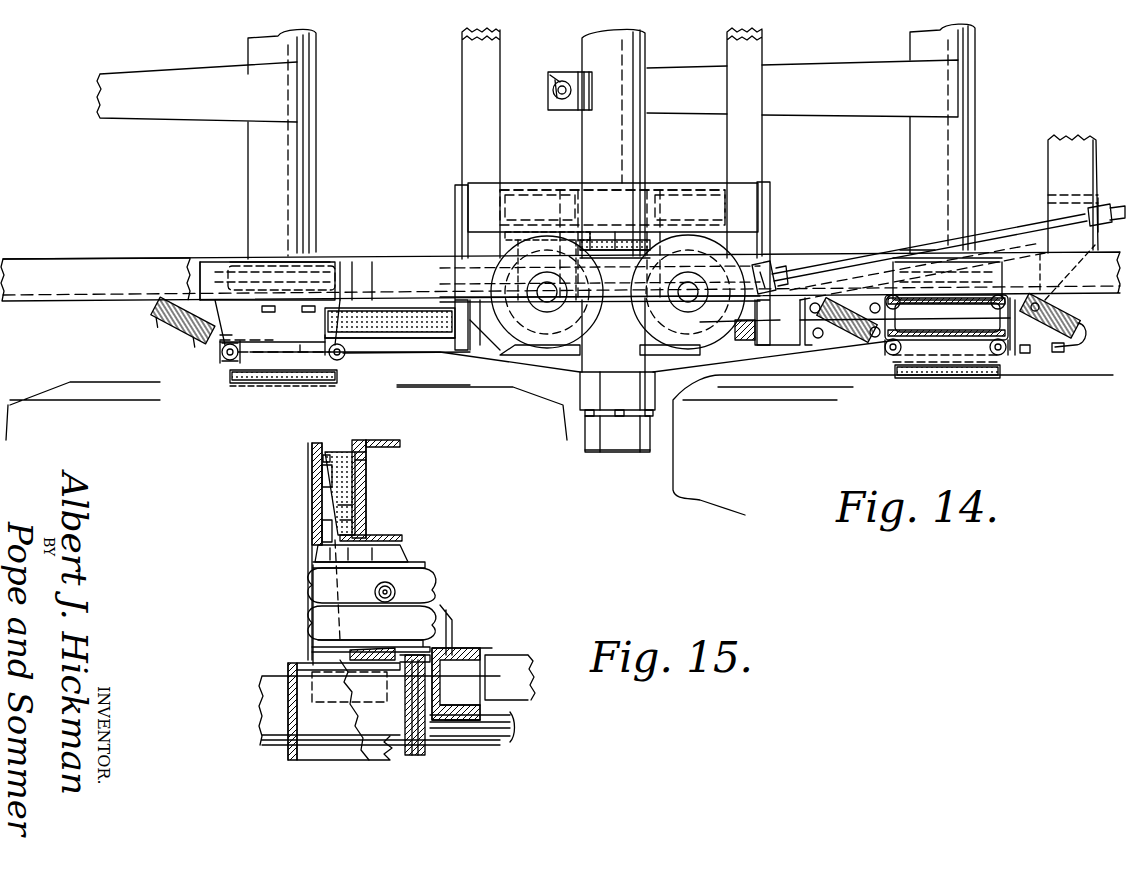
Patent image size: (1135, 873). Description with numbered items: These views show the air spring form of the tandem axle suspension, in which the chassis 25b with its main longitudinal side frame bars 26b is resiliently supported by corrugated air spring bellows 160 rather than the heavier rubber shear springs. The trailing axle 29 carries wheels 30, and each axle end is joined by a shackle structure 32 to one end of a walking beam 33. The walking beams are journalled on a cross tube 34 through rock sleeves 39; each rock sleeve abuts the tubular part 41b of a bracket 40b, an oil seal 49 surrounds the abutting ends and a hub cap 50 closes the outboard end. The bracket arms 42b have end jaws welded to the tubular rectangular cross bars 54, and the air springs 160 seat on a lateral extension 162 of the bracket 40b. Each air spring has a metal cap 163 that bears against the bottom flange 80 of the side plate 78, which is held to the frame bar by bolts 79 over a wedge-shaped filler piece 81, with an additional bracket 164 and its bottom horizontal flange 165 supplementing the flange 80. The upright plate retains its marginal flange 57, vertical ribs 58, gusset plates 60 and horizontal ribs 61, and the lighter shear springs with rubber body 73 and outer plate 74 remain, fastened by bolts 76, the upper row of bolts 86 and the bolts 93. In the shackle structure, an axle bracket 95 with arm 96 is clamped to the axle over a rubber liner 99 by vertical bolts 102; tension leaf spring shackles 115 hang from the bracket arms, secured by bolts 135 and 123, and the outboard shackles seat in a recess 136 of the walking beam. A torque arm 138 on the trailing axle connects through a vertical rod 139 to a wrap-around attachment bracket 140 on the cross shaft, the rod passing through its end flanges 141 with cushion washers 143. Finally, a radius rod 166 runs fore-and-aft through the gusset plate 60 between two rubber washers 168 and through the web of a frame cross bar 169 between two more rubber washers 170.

In FIG. 14, the chassis 25b is at (36, 262).
In FIG. 14, the main longitudinal side frame bar 26b is at (112, 240).
In FIG. 15, the main longitudinal side frame bar 26b is at (404, 442).
In FIG. 14, the trailing axle 29 is at (968, 40).
In FIG. 14, the wheels 30 is at (703, 506).
In FIG. 14, the shackle structure 32 is at (146, 315).
In FIG. 14, the walking beam 33 is at (534, 355).
In FIG. 15, the walking beam 33 is at (296, 662).
In FIG. 14, the cross tube 34 is at (645, 42).
In FIG. 15, the cross tube 34 is at (517, 718).
In FIG. 14, the rock sleeve 39 is at (632, 390).
In FIG. 15, the rock sleeve 39 is at (278, 748).
In FIG. 14, the bracket 40b is at (705, 183).
In FIG. 15, the bracket 40b is at (490, 654).
In FIG. 15, the tubular part 41b is at (470, 743).
In FIG. 14, the arms 42b is at (547, 192).
In FIG. 15, the arms 42b is at (486, 638).
In FIG. 14, the oil seal 49 is at (634, 230).
In FIG. 15, the oil seal 49 is at (424, 756).
In FIG. 14, the hub cap 50 is at (608, 450).
In FIG. 14, the cross bar 54 is at (763, 122).
In FIG. 15, the cross bar 54 is at (538, 678).
In FIG. 14, the marginal flange 57 is at (388, 336).
In FIG. 15, the marginal flange 57 is at (308, 442).
In FIG. 14, the vertical ribs 58 is at (780, 346).
In FIG. 14, the gusset plate 60 is at (771, 200).
In FIG. 15, the gusset plate 60 is at (440, 604).
In FIG. 15, the horizontal ribs 61 is at (312, 534).
In FIG. 14, the rubber body 73 is at (386, 316).
In FIG. 15, the rubber body 73 is at (368, 478).
In FIG. 14, the outer metal plate 74 is at (405, 377).
In FIG. 14, the bolts 76 is at (364, 336).
In FIG. 14, the side plate 78 is at (352, 260).
In FIG. 15, the side plate 78 is at (354, 442).
In FIG. 14, the bolts 79 is at (248, 304).
In FIG. 14, the flange 80 is at (210, 262).
In FIG. 15, the flange 80 is at (412, 542).
In FIG. 14, the wedge-shaped filler piece 81 is at (342, 262).
In FIG. 15, the wedge-shaped filler piece 81 is at (352, 442).
In FIG. 15, the upper row of bolts 86 is at (367, 462).
In FIG. 14, the upper row of bolts 93 is at (394, 260).
In FIG. 14, the axle bracket 95 is at (966, 335).
In FIG. 14, the arm 96 is at (200, 262).
In FIG. 14, the rubber liner 99 is at (944, 378).
In FIG. 14, the vertical bolts 102 is at (998, 358).
In FIG. 14, the leaf spring shackle 115 is at (176, 335).
In FIG. 14, the bolts 123 is at (818, 306).
In FIG. 14, the bolts 135 is at (1060, 350).
In FIG. 14, the recess 136 is at (1032, 350).
In FIG. 14, the axle torque arm 138 is at (854, 66).
In FIG. 14, the vertical rod 139 is at (556, 98).
In FIG. 14, the wrap-around attachment bracket 140 is at (592, 113).
In FIG. 14, the end flanges 141 is at (566, 74).
In FIG. 14, the cushion washers 143 is at (549, 74).
In FIG. 14, the air spring 160 is at (624, 328).
In FIG. 15, the air spring 160 is at (420, 588).
In FIG. 14, the lateral extension 162 is at (816, 338).
In FIG. 15, the lateral extension 162 is at (412, 750).
In FIG. 14, the metal cap 163 is at (720, 224).
In FIG. 15, the metal cap 163 is at (410, 552).
In FIG. 15, the additional bracket 164 is at (350, 504).
In FIG. 15, the bottom horizontal flange 165 is at (342, 519).
In FIG. 14, the radius rod 166 is at (1002, 222).
In FIG. 15, the radius rod 166 is at (424, 596).
In FIG. 14, the rubber washers 168 is at (774, 260).
In FIG. 15, the rubber washers 168 is at (400, 588).
In FIG. 14, the frame cross bar 169 is at (1087, 136).
In FIG. 14, the rubber washers 170 is at (1098, 194).